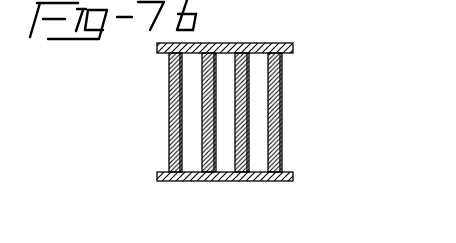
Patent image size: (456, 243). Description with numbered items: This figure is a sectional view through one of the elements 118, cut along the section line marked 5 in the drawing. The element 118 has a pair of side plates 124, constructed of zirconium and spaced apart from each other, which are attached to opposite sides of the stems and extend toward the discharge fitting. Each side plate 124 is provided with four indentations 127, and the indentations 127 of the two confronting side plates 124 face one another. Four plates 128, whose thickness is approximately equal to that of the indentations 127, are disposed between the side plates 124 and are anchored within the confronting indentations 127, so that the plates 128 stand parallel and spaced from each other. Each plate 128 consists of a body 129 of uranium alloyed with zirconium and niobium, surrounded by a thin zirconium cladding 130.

The side plates 124 is at (194, 49).
The indentations 127 is at (250, 53).
The plates 128 is at (278, 147).
The body 129 is at (170, 80).
The elements 118 is at (167, 131).
The cladding 130 is at (166, 150).
The section line 5- 5 is at (187, 118).